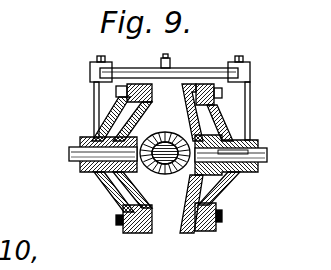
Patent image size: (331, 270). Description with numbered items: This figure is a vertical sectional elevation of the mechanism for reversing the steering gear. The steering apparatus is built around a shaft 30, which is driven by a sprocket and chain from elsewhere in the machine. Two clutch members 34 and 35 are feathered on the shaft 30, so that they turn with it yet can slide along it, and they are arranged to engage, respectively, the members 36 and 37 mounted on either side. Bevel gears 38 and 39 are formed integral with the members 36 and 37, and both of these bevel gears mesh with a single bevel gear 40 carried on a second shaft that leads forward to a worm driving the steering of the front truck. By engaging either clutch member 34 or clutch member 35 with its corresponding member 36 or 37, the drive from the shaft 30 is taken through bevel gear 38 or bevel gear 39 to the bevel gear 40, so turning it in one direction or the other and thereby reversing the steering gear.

The shaft 30 is at (128, 153).
The clutch member 34 is at (205, 207).
The clutch member 35 is at (112, 172).
The member 36 is at (189, 232).
The member 37 is at (135, 232).
The bevel gear 38 is at (180, 127).
The bevel gear 39 is at (108, 165).
The bevel gear 40 is at (188, 139).